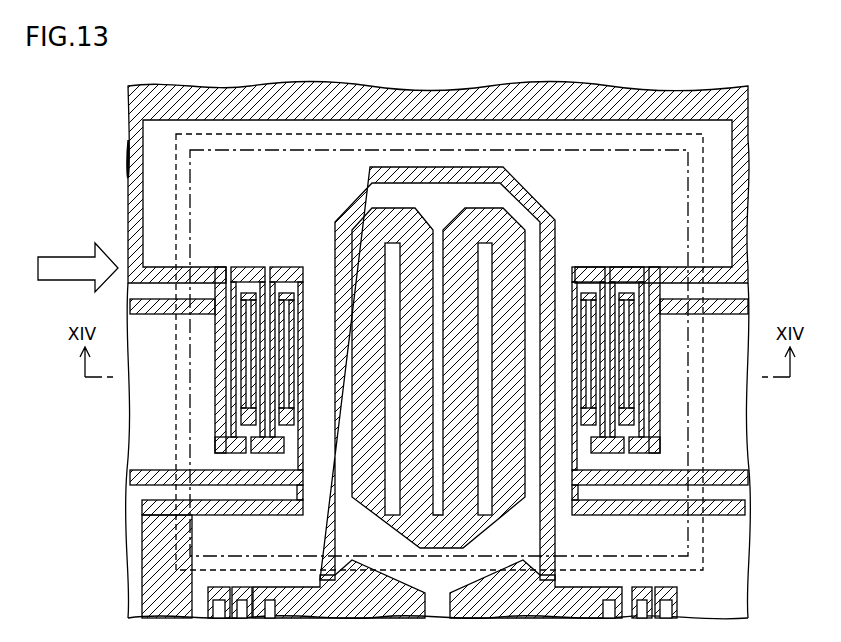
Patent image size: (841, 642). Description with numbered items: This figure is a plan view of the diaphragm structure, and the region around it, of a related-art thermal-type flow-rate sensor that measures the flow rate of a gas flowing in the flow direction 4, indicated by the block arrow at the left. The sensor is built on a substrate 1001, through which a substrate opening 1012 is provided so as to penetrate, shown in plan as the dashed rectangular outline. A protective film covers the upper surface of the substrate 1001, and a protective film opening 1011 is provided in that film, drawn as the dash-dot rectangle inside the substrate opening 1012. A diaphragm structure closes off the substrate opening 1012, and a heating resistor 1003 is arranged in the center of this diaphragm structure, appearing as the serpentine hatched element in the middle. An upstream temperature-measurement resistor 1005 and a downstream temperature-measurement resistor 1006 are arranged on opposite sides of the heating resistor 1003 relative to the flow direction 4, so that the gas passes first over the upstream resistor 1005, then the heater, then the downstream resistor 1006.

The substrate 1001 is at (575, 170).
The heating resistor 1003 is at (402, 222).
The upstream temperature-measurement resistor 1005 is at (248, 270).
The downstream temperature-measurement resistor 1006 is at (622, 270).
The protective film opening 1011 is at (270, 150).
The substrate opening 1012 is at (333, 134).
The flow direction 4 is at (67, 257).